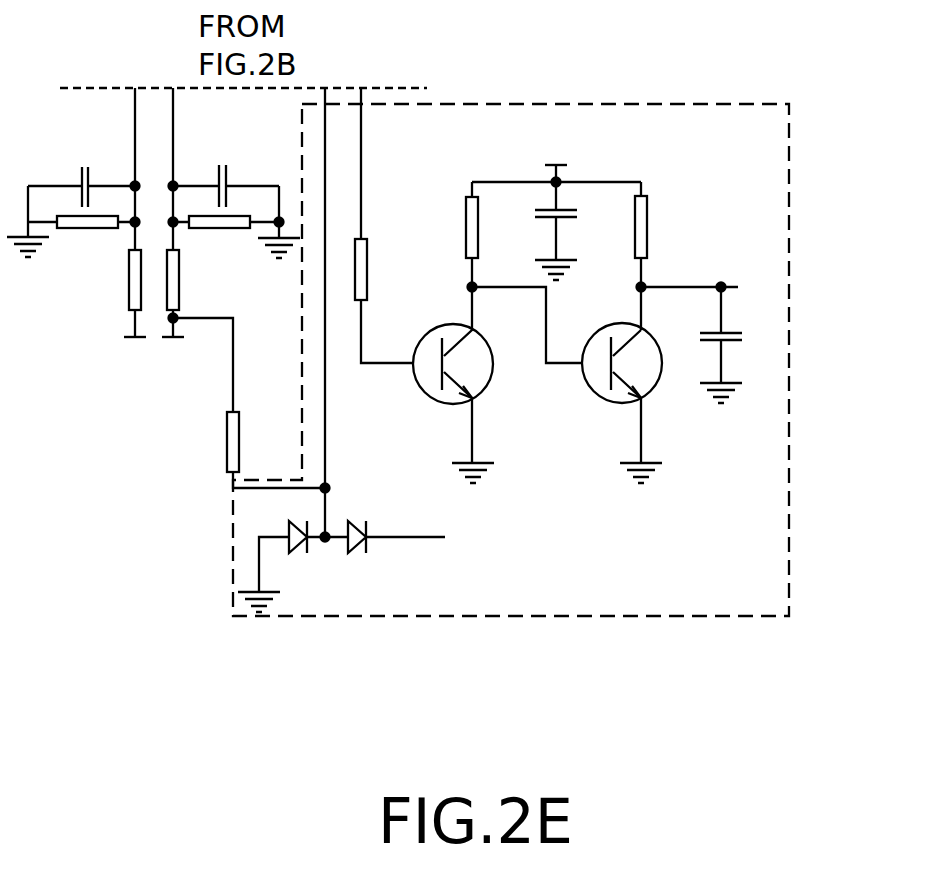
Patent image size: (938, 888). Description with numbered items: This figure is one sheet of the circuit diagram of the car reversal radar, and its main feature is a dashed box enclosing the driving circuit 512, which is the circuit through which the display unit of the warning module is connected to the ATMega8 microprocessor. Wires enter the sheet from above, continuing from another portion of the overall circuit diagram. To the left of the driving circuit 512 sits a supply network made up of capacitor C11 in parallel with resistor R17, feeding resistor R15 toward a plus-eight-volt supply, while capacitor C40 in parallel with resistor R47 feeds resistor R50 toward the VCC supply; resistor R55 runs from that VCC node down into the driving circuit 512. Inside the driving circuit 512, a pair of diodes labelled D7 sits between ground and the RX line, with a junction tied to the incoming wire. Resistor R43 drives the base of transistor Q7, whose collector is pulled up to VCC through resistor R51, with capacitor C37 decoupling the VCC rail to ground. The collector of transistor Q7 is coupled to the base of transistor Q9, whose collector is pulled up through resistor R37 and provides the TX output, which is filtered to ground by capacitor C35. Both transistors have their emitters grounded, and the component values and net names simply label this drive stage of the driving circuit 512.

The capacitor C11 is at (81, 194).
The resistor R17 is at (71, 236).
The resistor R15 is at (119, 313).
The capacitor C40 is at (226, 184).
The resistor R47 is at (236, 223).
The resistor R50 is at (196, 313).
The resistor R55 is at (251, 405).
The diode D7 is at (341, 562).
The receive signal line RX is at (436, 532).
The resistor R43 is at (389, 301).
The transistor Q7 is at (497, 383).
The resistor R51 is at (553, 234).
The capacitor C37 is at (583, 208).
The resistor R37 is at (686, 256).
The transistor Q9 is at (637, 403).
The capacitor C35 is at (748, 343).
The transmit signal line TX is at (744, 272).
The driving circuit 512 is at (737, 527).